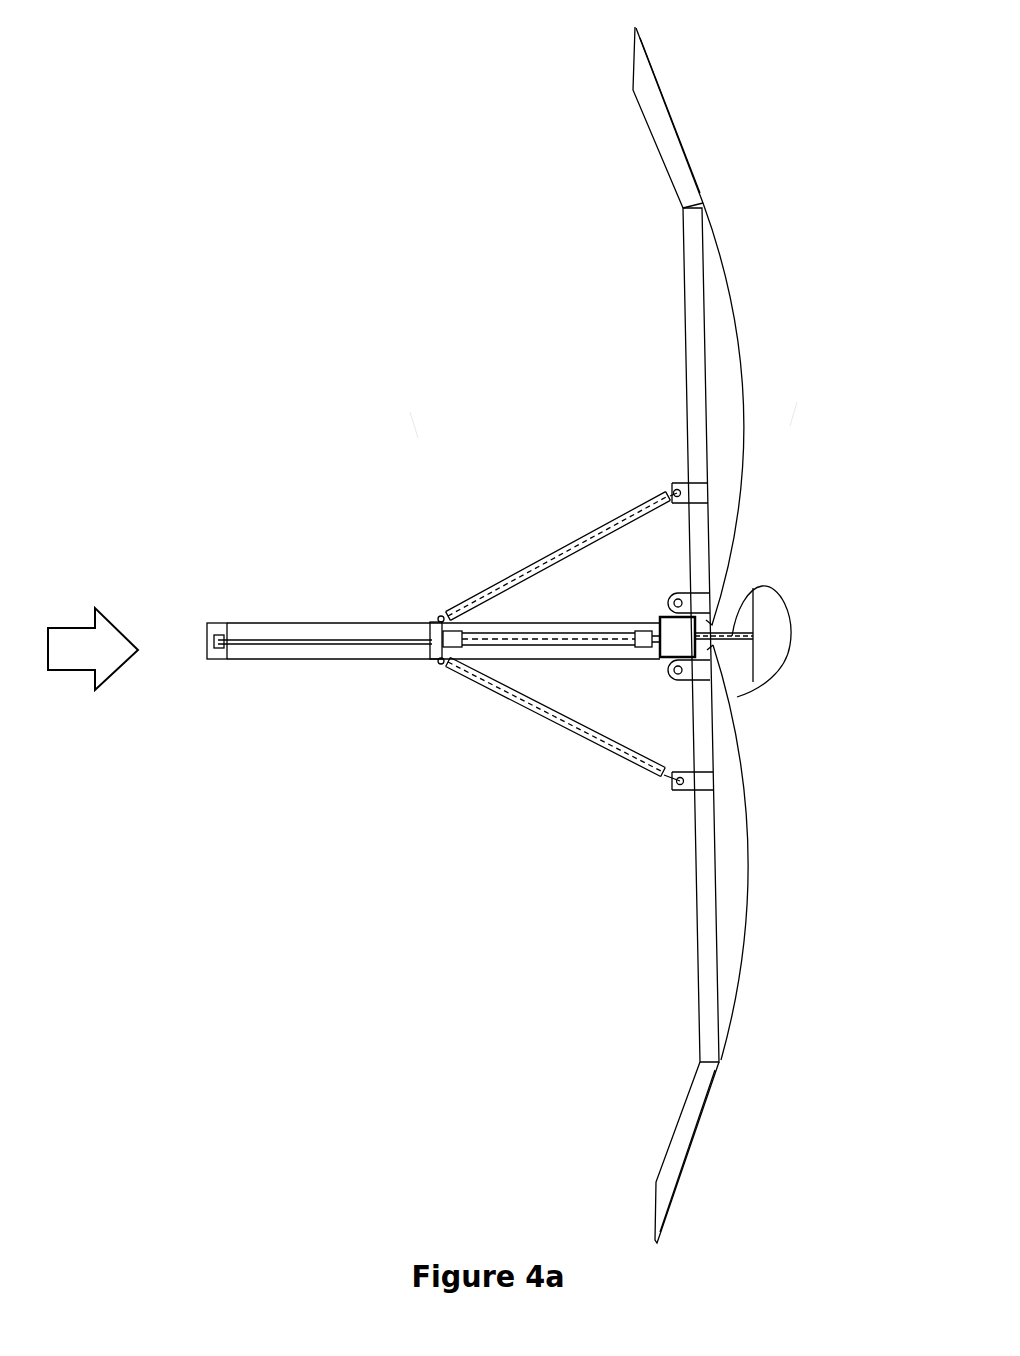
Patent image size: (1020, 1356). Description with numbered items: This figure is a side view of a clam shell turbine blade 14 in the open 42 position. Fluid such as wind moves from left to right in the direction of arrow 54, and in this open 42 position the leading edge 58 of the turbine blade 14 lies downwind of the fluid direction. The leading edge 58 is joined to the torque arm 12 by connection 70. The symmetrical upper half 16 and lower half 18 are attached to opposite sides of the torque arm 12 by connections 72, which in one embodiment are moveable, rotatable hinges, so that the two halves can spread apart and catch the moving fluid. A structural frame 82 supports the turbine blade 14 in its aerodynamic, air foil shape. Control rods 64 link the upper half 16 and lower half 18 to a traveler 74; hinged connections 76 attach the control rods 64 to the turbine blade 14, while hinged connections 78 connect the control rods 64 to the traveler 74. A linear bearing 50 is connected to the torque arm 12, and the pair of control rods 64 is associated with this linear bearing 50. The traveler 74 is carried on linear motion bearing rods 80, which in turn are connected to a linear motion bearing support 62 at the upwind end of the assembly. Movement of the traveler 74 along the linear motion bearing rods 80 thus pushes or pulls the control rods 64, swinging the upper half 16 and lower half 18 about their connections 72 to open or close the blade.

The torque arm 12 is at (660, 620).
The turbine blade 14 is at (815, 434).
The upper half 16 is at (735, 282).
The lower half 18 is at (733, 925).
The open position 42 is at (395, 448).
The linear bearing 50 is at (583, 648).
The arrow 54 is at (68, 627).
The leading edge 58 is at (792, 637).
The linear motion bearing support 62 is at (228, 660).
The control rods 64 is at (560, 555).
The connection 70 is at (735, 596).
The connections 72 is at (678, 597).
The traveler 74 is at (430, 625).
The hinged connections 76 is at (672, 488).
The hinged connections 78 is at (440, 618).
The linear motion bearing rods 80 is at (312, 623).
The structural frame 82 is at (708, 1013).